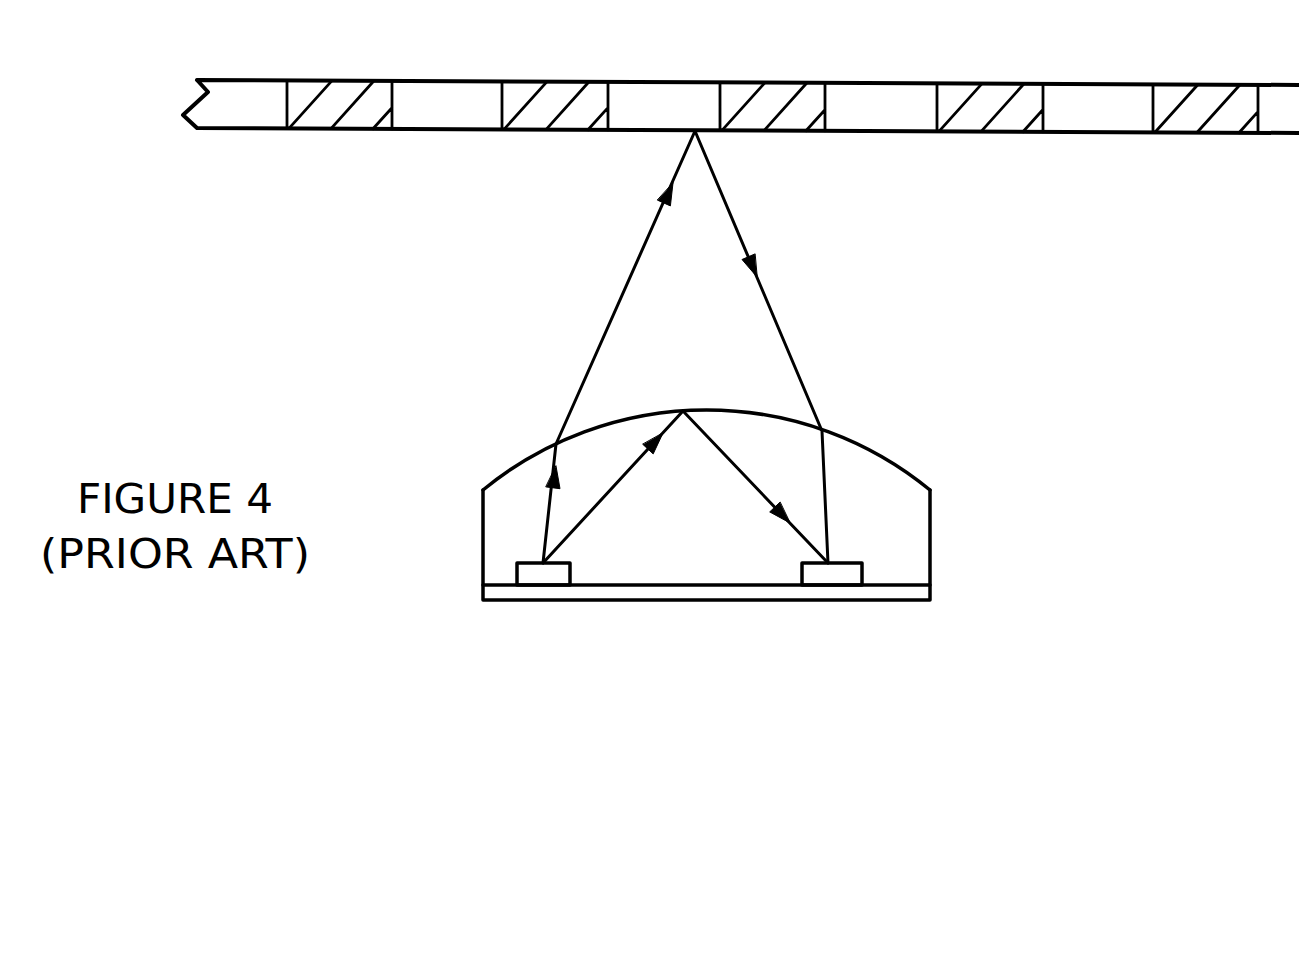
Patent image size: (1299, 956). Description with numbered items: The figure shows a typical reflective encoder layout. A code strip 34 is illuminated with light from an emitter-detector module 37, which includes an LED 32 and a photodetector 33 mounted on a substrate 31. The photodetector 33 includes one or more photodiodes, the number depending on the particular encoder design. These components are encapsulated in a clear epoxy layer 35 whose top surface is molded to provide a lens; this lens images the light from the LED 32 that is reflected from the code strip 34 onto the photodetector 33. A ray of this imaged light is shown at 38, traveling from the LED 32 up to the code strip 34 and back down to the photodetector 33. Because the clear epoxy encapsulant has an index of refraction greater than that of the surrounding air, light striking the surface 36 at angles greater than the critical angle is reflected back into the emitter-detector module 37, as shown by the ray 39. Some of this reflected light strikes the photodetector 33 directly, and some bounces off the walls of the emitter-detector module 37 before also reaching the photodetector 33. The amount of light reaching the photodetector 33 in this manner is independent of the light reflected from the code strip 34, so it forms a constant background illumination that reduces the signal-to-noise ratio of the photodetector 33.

The substrate 31 is at (663, 592).
The LED 32 is at (542, 573).
The photodetector 33 is at (837, 575).
The code strip 34 is at (1120, 115).
The clear epoxy layer 35 is at (930, 552).
The surface 36 is at (890, 463).
The emitter-detector module 37 is at (656, 542).
The ray of the imaged light source 38 is at (610, 320).
The reflected light 39 is at (733, 453).